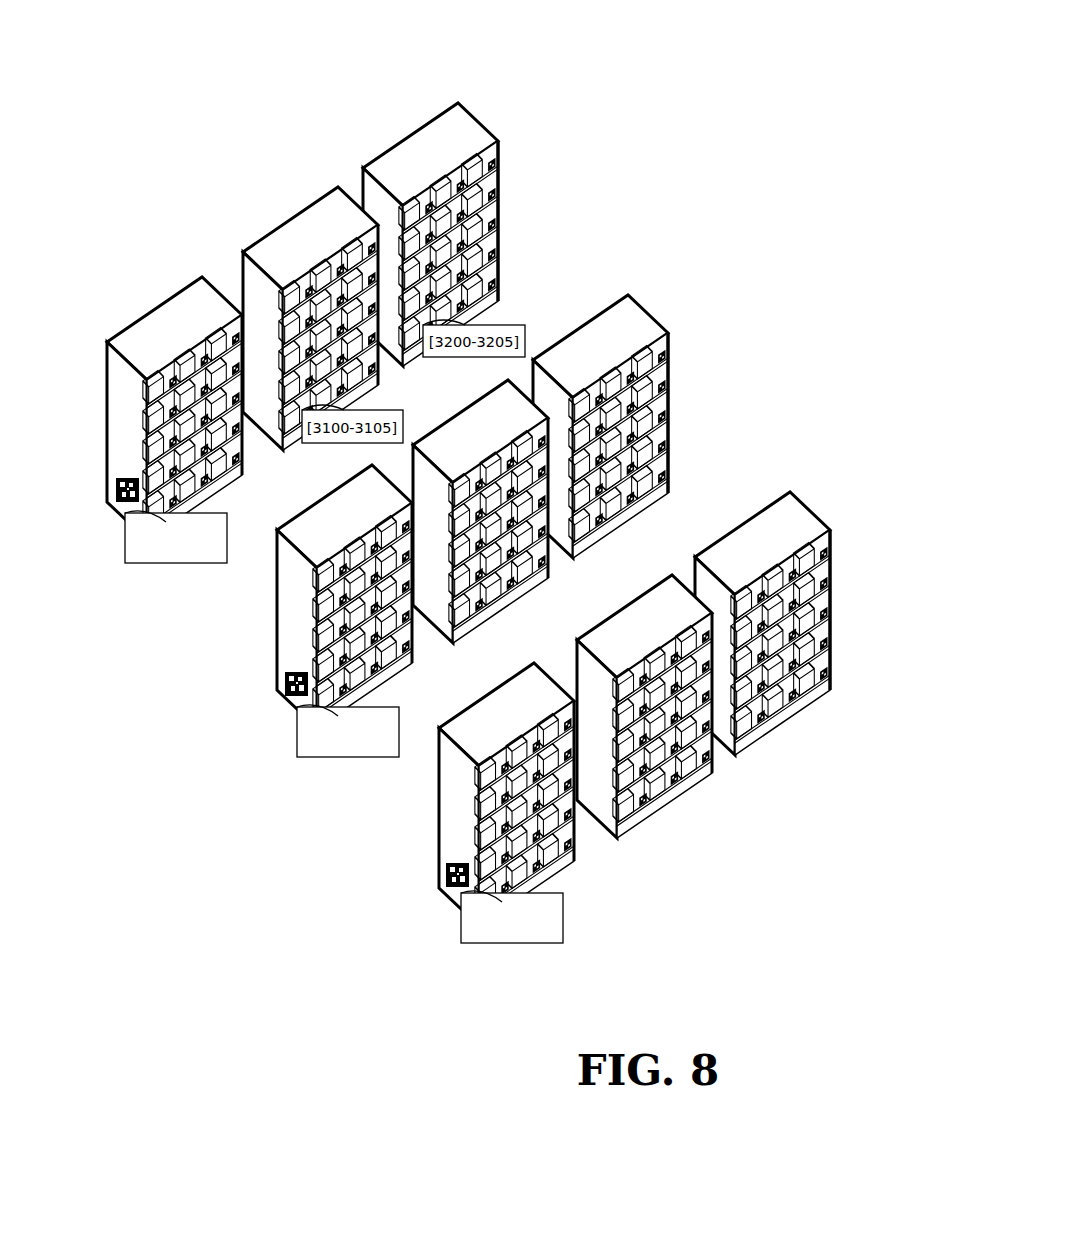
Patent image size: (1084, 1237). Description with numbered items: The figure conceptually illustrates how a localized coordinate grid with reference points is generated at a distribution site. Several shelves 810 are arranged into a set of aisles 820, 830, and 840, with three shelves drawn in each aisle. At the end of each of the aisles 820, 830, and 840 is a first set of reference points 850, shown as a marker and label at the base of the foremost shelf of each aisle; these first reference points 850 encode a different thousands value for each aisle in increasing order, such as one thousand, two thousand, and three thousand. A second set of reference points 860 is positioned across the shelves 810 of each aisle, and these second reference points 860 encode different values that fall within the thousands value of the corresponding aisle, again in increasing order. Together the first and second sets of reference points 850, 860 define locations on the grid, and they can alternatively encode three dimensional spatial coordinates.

The shelves 810 is at (495, 463).
The aisle 820 is at (489, 108).
The aisle 830 is at (657, 317).
The aisle 840 is at (817, 510).
The first set of reference points 850 is at (164, 557).
The second set of reference points 860 is at (496, 268).